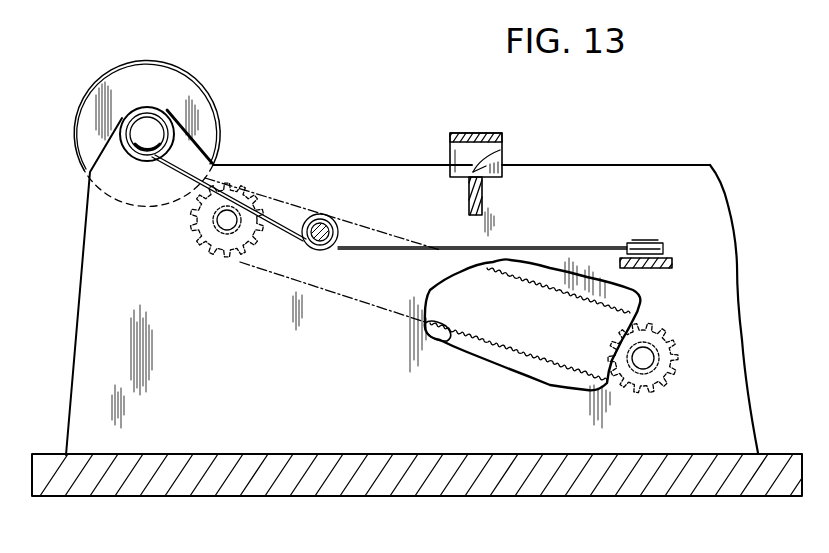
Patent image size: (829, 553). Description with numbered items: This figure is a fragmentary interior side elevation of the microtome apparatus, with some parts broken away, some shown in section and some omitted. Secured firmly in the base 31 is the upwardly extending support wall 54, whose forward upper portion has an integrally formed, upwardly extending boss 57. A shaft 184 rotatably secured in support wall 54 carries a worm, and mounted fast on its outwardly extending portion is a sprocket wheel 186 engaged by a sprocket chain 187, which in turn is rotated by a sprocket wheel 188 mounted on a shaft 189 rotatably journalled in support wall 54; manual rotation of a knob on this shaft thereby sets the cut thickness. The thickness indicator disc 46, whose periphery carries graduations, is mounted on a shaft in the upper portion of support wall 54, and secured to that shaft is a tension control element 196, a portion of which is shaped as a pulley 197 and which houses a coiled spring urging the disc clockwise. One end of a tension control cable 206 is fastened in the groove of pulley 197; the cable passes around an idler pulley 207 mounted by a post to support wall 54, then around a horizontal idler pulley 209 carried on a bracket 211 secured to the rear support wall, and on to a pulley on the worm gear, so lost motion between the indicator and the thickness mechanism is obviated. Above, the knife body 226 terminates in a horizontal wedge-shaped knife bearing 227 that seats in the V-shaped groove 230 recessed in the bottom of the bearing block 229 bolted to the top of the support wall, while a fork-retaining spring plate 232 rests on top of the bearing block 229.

The base 31 is at (700, 480).
The thickness indicator disc 46 is at (118, 73).
The support wall 54 is at (92, 330).
The boss 57 is at (163, 100).
The shaft 184 is at (648, 358).
The sprocket wheel 186 is at (668, 388).
The sprocket chain 187 is at (430, 342).
The sprocket wheel 188 is at (209, 254).
The shaft 189 is at (220, 222).
The tension control element 196 is at (147, 152).
The pulley 197 is at (126, 148).
The tension control cable 206 is at (205, 175).
The idler pulley 207 is at (327, 250).
The horizontal idler pulley 209 is at (660, 243).
The bracket 211 is at (655, 268).
The knife body 226 is at (484, 203).
The knife bearing 227 is at (486, 166).
The bearing block 229 is at (450, 153).
The V-shaped groove 230 is at (500, 150).
The fork-retaining spring plate 232 is at (470, 133).